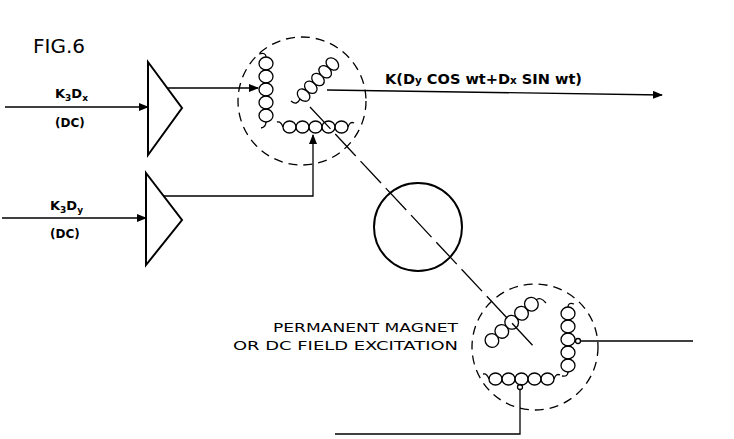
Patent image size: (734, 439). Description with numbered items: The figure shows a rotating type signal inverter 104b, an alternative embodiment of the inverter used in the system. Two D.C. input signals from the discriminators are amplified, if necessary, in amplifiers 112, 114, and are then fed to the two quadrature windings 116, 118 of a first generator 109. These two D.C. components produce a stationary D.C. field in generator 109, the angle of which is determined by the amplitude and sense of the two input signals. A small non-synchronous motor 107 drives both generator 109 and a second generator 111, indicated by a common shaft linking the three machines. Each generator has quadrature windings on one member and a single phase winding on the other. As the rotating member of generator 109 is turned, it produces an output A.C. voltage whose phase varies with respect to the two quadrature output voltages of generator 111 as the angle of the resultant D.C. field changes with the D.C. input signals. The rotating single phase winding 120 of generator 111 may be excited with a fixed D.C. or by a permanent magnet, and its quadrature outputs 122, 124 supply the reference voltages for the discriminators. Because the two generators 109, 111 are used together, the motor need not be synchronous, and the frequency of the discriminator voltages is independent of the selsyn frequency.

The rotating type signal inverter 104b is at (328, 220).
The non-synchronous motor 107 is at (462, 234).
The generator 109 is at (327, 43).
The generator 111 is at (548, 284).
The amplifier 112 is at (165, 130).
The amplifier 114 is at (163, 246).
The quadrature winding 116 is at (258, 104).
The quadrature winding 118 is at (298, 135).
The rotating single phase winding 120 is at (487, 345).
The quadrature output 122 is at (581, 315).
The quadrature output 124 is at (500, 390).